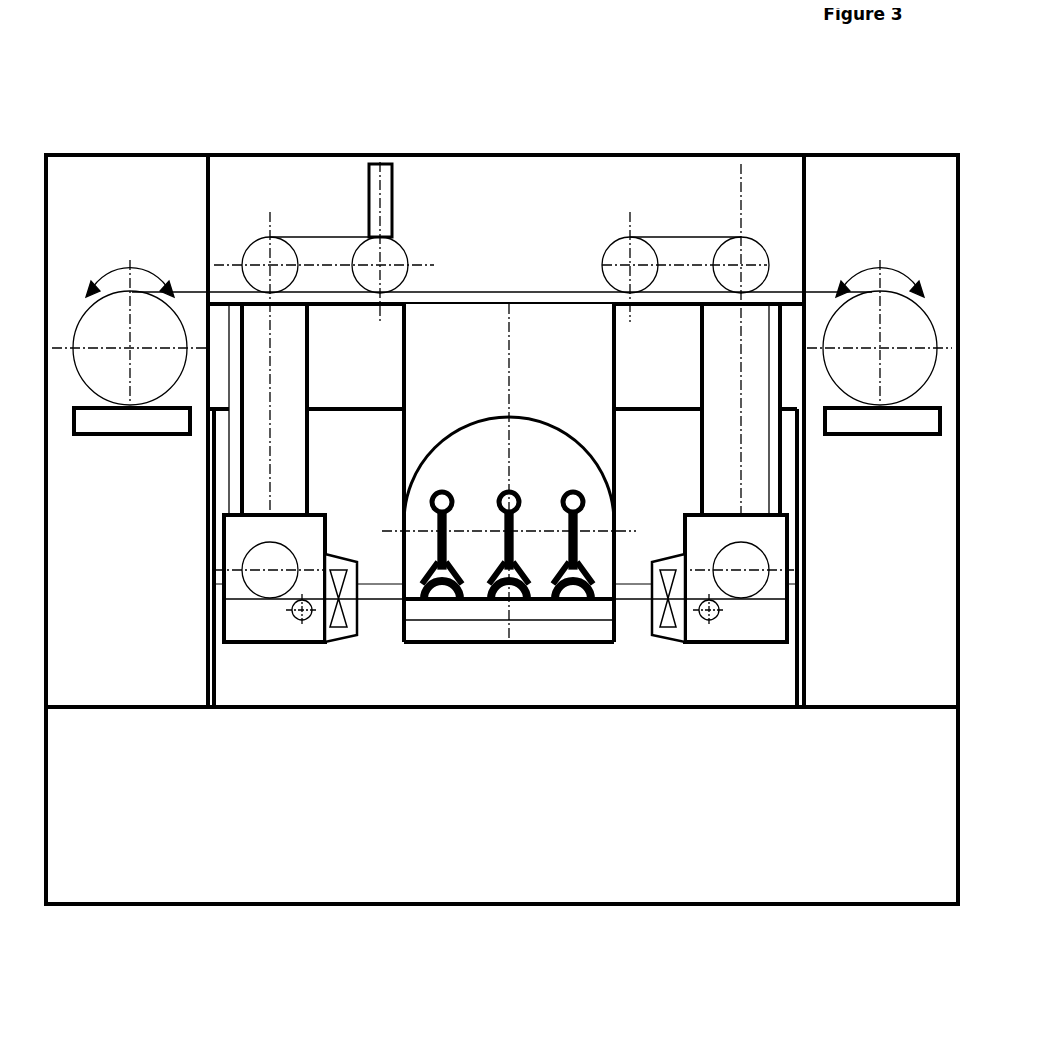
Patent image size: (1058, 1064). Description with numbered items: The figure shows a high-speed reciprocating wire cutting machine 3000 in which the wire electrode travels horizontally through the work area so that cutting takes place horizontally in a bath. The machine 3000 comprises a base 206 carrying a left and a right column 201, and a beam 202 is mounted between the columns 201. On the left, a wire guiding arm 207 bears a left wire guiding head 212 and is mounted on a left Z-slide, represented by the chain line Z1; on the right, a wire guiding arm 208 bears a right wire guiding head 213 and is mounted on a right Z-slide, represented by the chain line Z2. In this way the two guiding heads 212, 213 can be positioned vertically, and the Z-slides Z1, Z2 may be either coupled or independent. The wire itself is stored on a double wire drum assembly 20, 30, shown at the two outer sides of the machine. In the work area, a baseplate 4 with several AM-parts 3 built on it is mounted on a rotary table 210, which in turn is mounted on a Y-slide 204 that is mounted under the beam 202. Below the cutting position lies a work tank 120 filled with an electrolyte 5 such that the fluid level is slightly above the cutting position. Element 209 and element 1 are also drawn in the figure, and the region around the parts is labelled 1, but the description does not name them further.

The high-speed reciprocating wire cutting machine 3000 is at (581, 58).
The column 201 is at (77, 667).
The base 206 is at (166, 880).
The beam 202 is at (226, 172).
The double wire drum assembly 20 is at (110, 246).
The double wire drum assembly 30 is at (866, 236).
The drive rod 209 is at (375, 208).
The Y-slide 204 is at (557, 307).
The left Z-slide Z1 is at (268, 353).
The left wire guiding arm 207 is at (297, 437).
The right Z-slide Z2 is at (740, 382).
The right wire guiding arm 208 is at (713, 431).
The work tank 120 is at (793, 673).
The electrolyte 5 is at (753, 687).
The left wire guiding head 212 is at (352, 615).
The right wire guiding head 213 is at (675, 632).
The cleaning chamber 1 is at (640, 597).
The baseplate 4 is at (445, 609).
The rotary table 210 is at (420, 632).
The AM-parts 3 is at (568, 540).